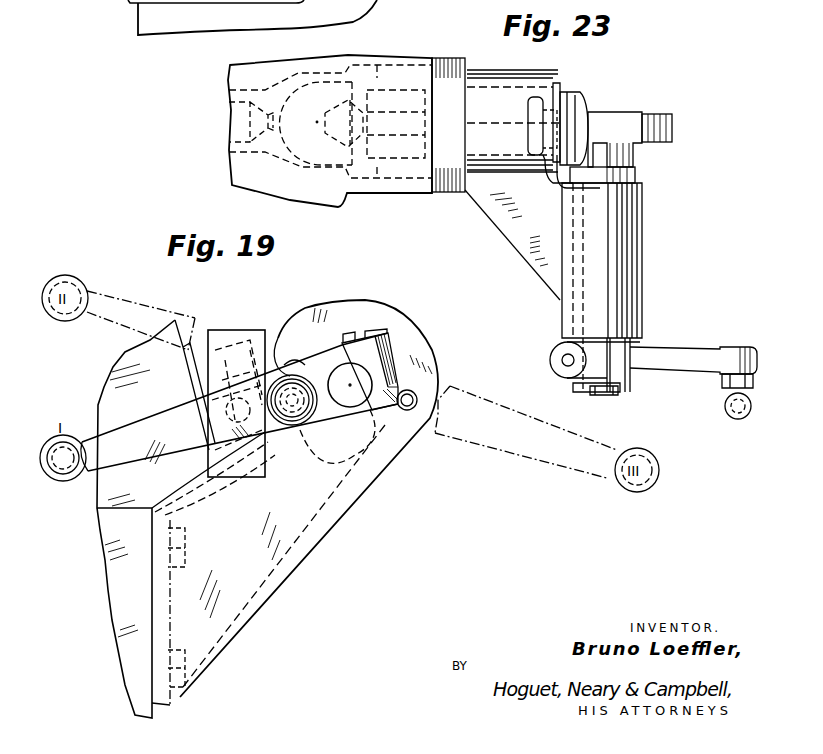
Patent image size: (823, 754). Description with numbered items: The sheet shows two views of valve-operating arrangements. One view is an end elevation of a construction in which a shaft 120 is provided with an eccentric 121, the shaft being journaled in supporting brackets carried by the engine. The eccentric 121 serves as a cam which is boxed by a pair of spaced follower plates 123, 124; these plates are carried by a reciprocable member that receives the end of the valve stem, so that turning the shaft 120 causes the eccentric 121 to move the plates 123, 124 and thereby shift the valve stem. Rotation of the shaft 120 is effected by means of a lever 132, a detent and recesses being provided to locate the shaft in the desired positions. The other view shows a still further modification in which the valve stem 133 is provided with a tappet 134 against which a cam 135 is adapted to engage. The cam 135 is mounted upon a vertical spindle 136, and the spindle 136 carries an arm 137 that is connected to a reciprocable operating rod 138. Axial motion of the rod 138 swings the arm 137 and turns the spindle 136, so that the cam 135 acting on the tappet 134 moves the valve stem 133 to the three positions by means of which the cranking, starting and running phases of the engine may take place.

In FIG. 19, the shaft 120 is at (338, 363).
In FIG. 19, the eccentric 121 is at (371, 448).
In FIG. 19, the follower plate 123 is at (280, 338).
In FIG. 19, the follower plate 124 is at (393, 435).
In FIG. 19, the lever 132 is at (153, 432).
In FIG. 23, the valve stem 133 is at (393, 112).
In FIG. 23, the tappet 134 is at (587, 103).
In FIG. 23, the cam 135 is at (672, 127).
In FIG. 23, the vertical spindle 136 is at (612, 392).
In FIG. 23, the arm 137 is at (687, 360).
In FIG. 23, the operating rod 138 is at (727, 417).